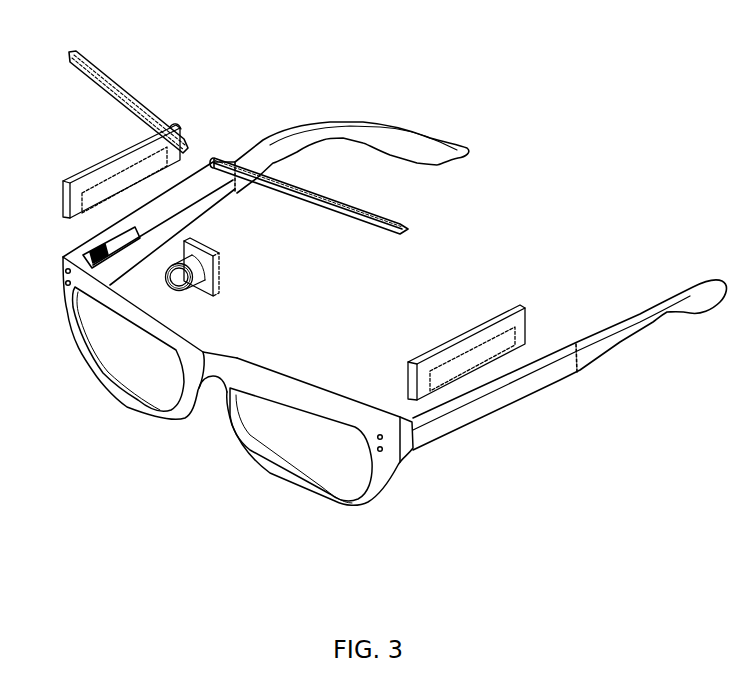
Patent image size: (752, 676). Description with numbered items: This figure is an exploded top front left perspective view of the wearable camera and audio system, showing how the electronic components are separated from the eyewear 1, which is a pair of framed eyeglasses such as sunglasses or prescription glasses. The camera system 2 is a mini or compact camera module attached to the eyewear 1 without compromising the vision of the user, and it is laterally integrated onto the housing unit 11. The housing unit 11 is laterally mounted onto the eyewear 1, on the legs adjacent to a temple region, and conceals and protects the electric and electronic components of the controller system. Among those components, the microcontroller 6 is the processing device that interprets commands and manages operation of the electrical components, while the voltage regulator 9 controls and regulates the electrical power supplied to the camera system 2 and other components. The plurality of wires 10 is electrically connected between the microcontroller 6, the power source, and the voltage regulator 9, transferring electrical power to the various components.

The eyewear 1 is at (218, 380).
The camera system 2 is at (212, 254).
The microcontroller 6 is at (119, 171).
The voltage regulator 9 is at (507, 350).
The plurality of wires 10 is at (148, 108).
The housing unit 11 is at (104, 74).